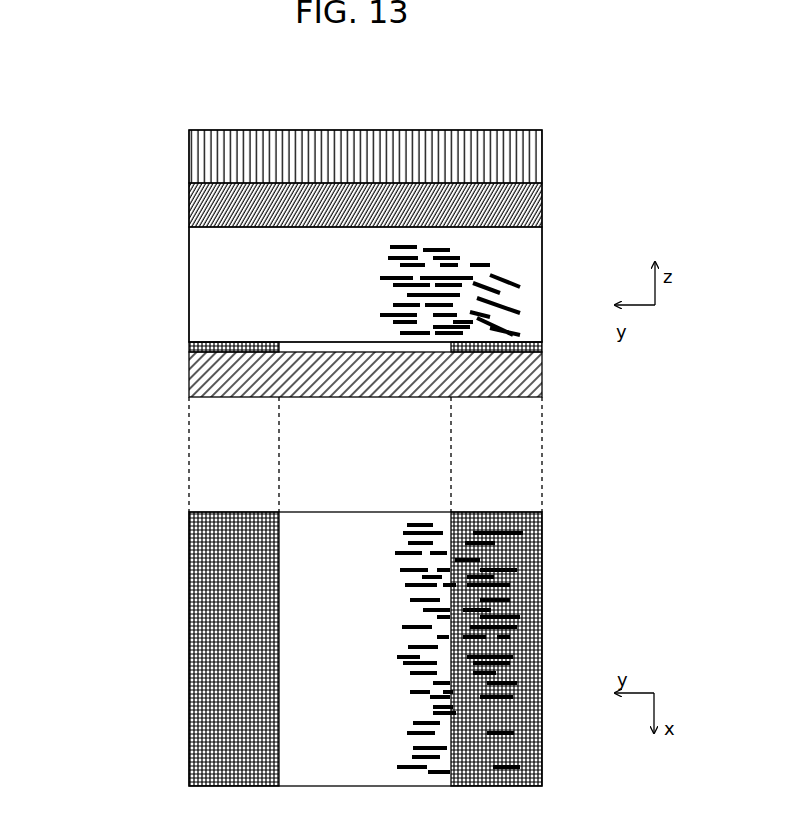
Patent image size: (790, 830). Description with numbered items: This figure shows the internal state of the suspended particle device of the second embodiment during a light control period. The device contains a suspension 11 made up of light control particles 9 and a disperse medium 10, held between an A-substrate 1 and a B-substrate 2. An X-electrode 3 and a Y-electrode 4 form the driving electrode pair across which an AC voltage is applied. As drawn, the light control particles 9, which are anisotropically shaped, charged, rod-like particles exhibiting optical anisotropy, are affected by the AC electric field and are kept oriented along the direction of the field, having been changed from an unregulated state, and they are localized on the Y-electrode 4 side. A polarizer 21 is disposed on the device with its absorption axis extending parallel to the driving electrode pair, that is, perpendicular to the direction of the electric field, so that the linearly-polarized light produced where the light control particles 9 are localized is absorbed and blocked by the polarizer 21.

The A-substrate 1 is at (189, 383).
The B-substrate 2 is at (189, 206).
The X-electrode 3 is at (189, 627).
The Y-electrode 4 is at (542, 630).
The light control particles 9 is at (395, 318).
The disperse medium 10 is at (205, 307).
The suspension 11 is at (108, 227).
The polarizer 21 is at (189, 157).